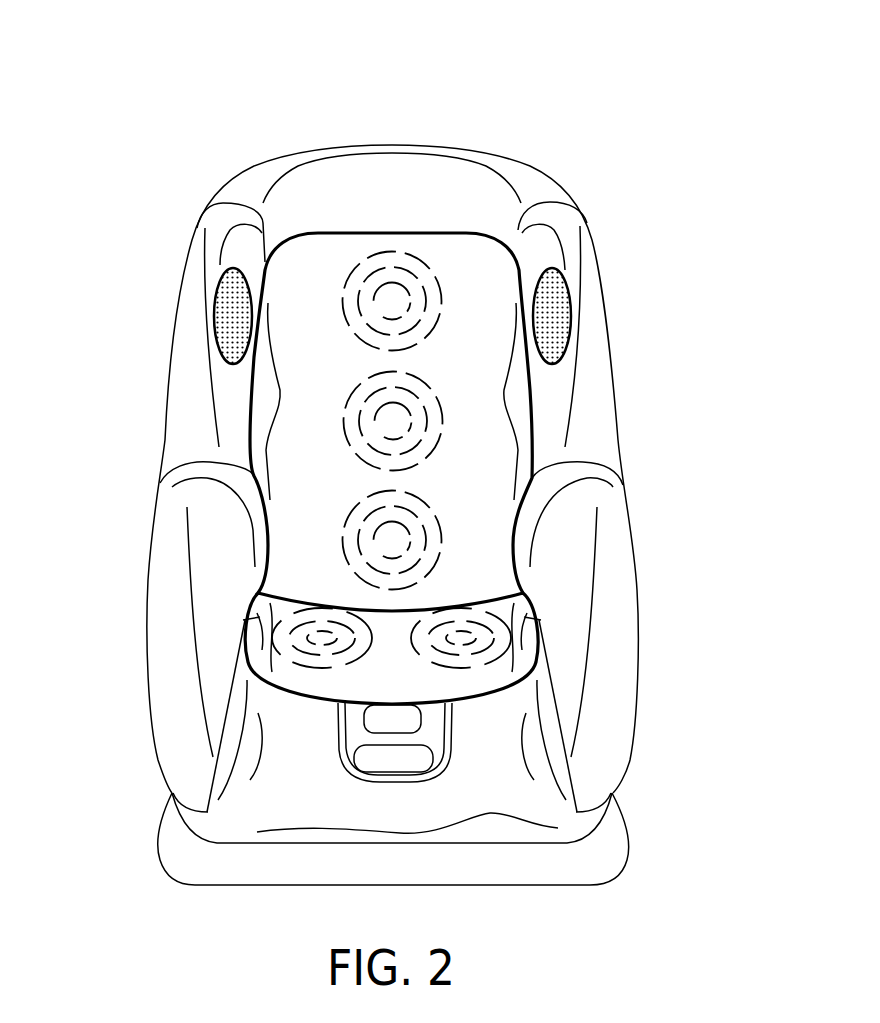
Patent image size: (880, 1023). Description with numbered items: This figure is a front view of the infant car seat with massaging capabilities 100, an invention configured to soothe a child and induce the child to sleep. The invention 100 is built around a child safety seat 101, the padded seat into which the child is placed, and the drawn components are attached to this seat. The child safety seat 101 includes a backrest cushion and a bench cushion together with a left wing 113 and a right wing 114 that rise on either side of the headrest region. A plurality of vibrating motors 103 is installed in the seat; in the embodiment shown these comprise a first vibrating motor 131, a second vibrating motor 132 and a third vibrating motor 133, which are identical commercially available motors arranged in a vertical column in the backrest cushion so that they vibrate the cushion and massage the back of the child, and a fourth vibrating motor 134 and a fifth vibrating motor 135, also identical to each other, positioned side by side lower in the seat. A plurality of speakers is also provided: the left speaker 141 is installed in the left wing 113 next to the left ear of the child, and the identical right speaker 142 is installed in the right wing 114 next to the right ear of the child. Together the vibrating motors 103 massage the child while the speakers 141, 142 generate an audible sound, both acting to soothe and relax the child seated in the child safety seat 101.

The infant car seat with massaging capabilities 100 is at (118, 101).
The child safety seat 101 is at (538, 172).
The plurality of vibrating motors 103 is at (292, 421).
The left wing 113 is at (578, 233).
The right wing 114 is at (233, 222).
The first vibrating motor 131 is at (412, 284).
The second vibrating motor 132 is at (432, 415).
The third vibrating motor 133 is at (415, 537).
The fourth vibrating motor 134 is at (316, 668).
The fifth vibrating motor 135 is at (467, 667).
The left speaker 141 is at (555, 312).
The right speaker 142 is at (232, 307).